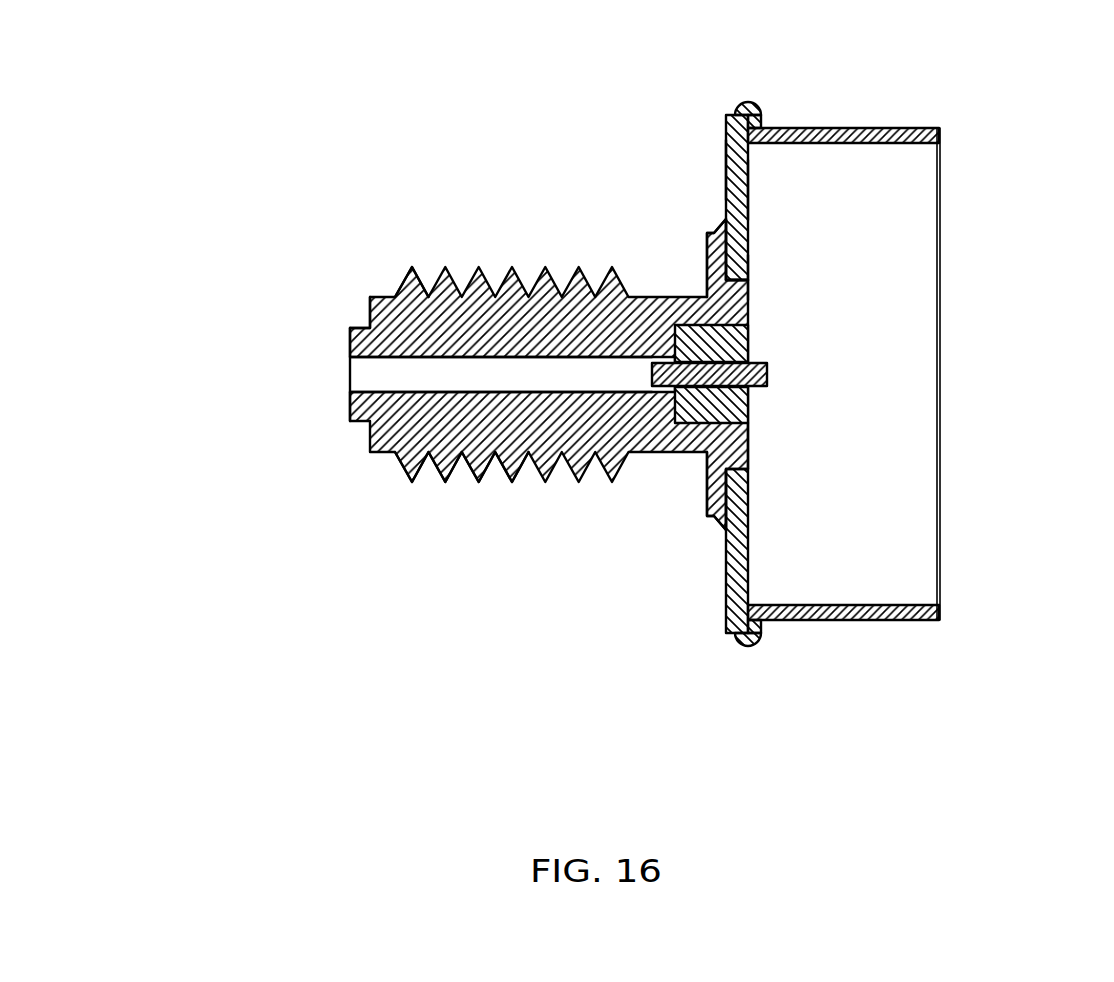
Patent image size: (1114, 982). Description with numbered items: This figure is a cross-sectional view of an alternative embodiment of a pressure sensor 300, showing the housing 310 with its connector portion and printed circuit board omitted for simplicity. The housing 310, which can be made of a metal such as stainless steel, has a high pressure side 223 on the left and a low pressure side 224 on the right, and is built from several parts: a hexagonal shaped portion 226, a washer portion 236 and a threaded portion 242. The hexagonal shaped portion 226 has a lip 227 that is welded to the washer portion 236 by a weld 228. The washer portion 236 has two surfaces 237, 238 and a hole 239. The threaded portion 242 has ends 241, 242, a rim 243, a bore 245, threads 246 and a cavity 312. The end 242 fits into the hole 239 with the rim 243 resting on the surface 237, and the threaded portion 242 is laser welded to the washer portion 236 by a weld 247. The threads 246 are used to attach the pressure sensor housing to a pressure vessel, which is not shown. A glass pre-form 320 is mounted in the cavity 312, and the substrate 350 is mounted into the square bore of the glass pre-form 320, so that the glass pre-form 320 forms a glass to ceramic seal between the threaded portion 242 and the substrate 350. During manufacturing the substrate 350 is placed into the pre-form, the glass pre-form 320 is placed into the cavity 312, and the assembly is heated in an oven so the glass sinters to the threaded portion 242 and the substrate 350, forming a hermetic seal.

The pressure sensor 300 is at (321, 143).
The housing 310 is at (565, 219).
The glass pre-form 320 is at (748, 346).
The substrate 350 is at (774, 380).
The low pressure side 224 is at (861, 402).
The hexagonal shaped portion 226 is at (836, 122).
The washer portion 236 is at (720, 583).
The lip 227 is at (760, 631).
The weld 228 is at (748, 652).
The surface 237 is at (726, 163).
The surface 238 is at (748, 190).
The hole 239 is at (748, 267).
The high pressure side 223 is at (201, 360).
The end 241 is at (370, 302).
The threaded portion 242 is at (382, 290).
The rim 243 is at (707, 265).
The bore 245 is at (352, 378).
The threads 246 is at (505, 478).
The weld 247 is at (722, 528).
The cavity 312 is at (748, 442).